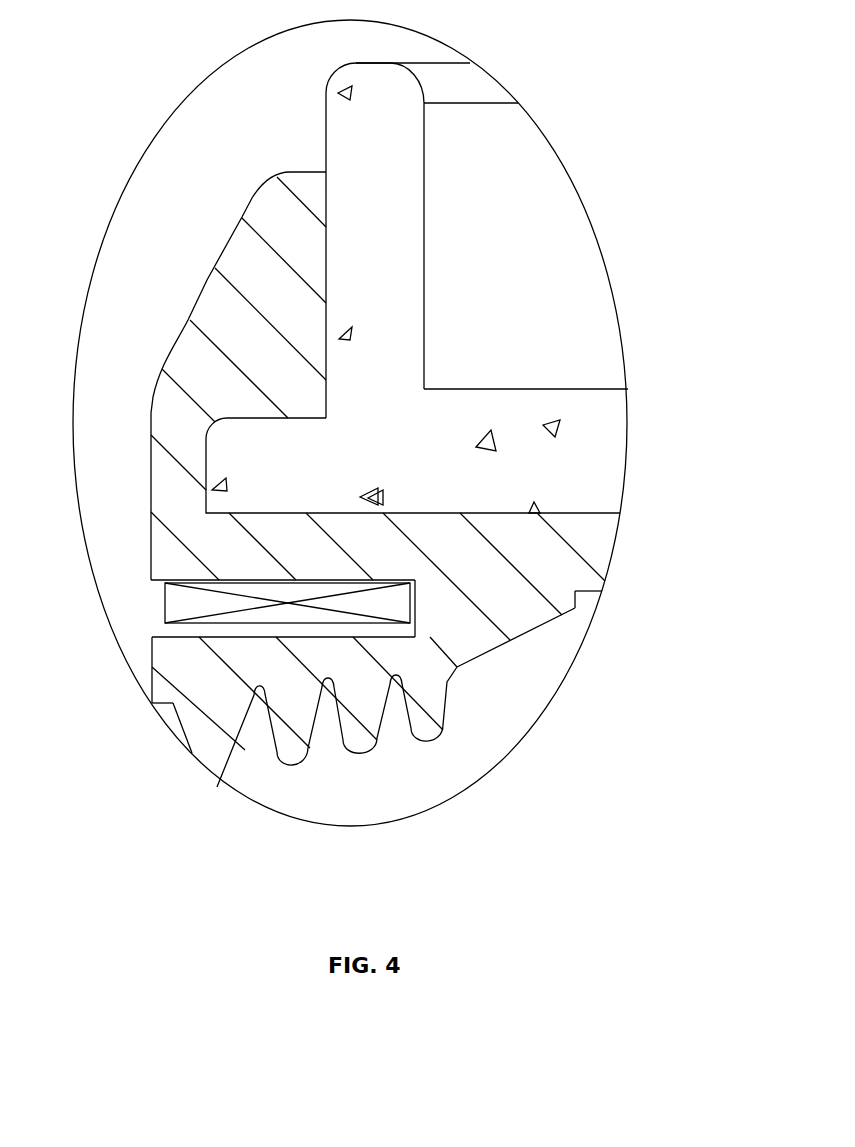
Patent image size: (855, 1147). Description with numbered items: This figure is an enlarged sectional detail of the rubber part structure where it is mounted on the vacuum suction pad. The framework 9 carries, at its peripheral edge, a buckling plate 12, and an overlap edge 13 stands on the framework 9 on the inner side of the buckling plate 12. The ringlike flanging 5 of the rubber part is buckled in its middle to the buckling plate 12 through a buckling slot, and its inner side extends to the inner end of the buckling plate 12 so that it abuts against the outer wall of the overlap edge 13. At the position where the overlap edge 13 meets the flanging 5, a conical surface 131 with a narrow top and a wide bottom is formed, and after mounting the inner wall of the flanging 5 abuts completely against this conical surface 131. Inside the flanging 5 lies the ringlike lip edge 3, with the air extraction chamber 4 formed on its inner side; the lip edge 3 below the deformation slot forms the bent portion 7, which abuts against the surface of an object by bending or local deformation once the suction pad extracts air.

The lip edge 3 is at (533, 560).
The air extraction chamber 4 is at (495, 697).
The flanging 5 is at (280, 303).
The bent portion 7 is at (295, 702).
The framework 9 is at (518, 458).
The buckling plate 12 is at (248, 458).
The overlap edge 13 is at (388, 349).
The conical surface 131 is at (326, 192).